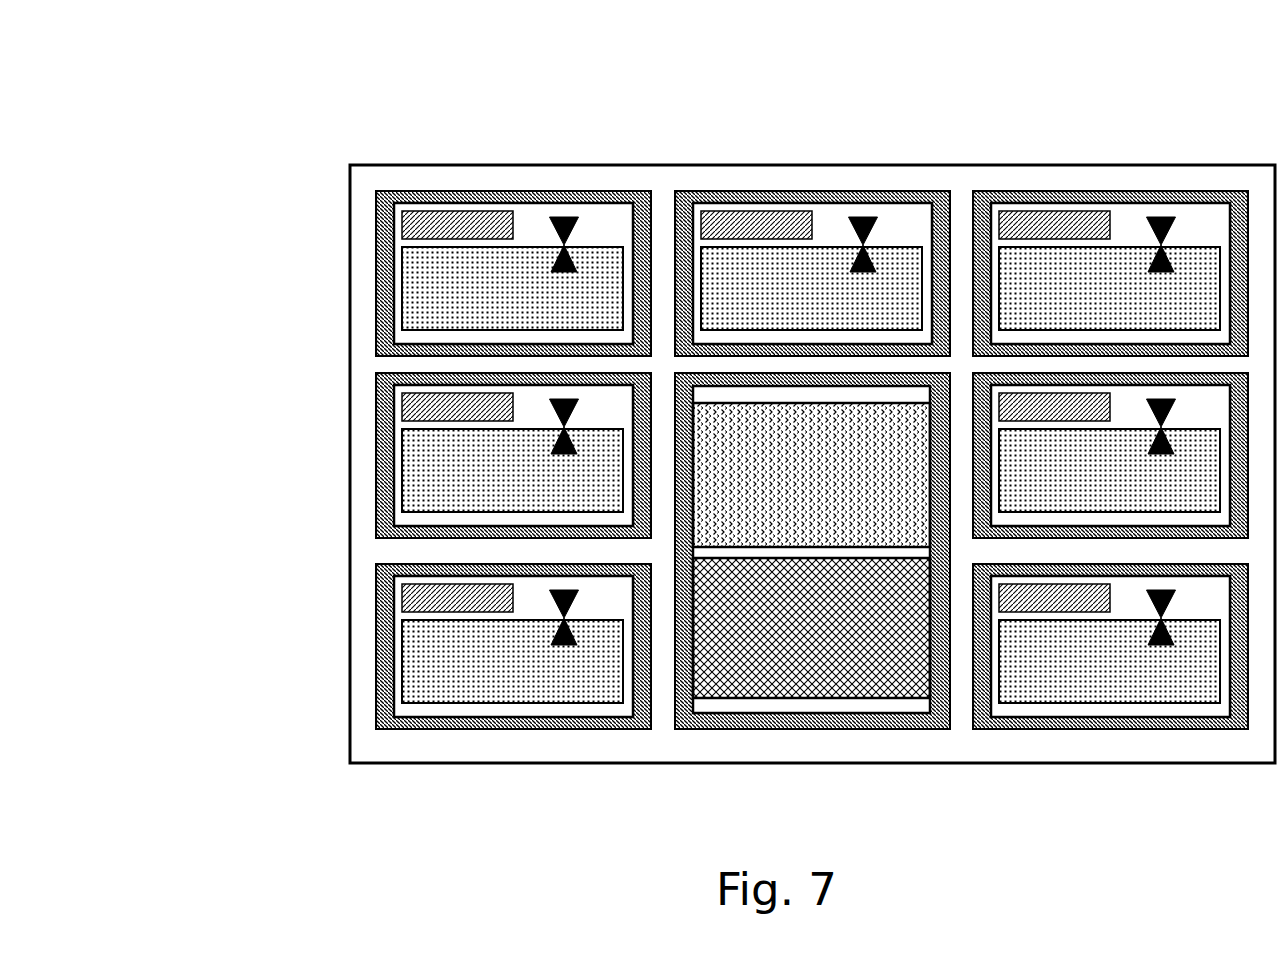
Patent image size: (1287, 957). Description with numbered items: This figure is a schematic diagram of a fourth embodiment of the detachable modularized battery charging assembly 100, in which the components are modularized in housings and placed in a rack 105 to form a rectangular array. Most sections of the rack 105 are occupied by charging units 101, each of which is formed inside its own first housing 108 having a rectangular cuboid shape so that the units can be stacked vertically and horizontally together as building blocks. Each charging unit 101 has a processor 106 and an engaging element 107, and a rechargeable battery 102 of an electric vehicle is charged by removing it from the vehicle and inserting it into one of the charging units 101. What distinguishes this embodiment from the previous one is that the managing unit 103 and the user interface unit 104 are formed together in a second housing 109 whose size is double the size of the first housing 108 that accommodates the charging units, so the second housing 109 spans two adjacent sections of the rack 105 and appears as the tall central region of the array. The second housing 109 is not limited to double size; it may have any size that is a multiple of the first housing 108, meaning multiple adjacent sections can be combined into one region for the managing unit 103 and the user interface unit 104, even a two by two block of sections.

The detachable modularized battery charging assembly 100 is at (277, 66).
The charging unit 101 is at (606, 226).
The rechargeable battery 102 is at (424, 282).
The managing unit 103 is at (755, 658).
The user interface unit 104 is at (745, 462).
The rack 105 is at (978, 167).
The processor 106 is at (437, 230).
The engaging element 107 is at (565, 225).
The first housing 108 is at (378, 250).
The second housing 109 is at (843, 717).